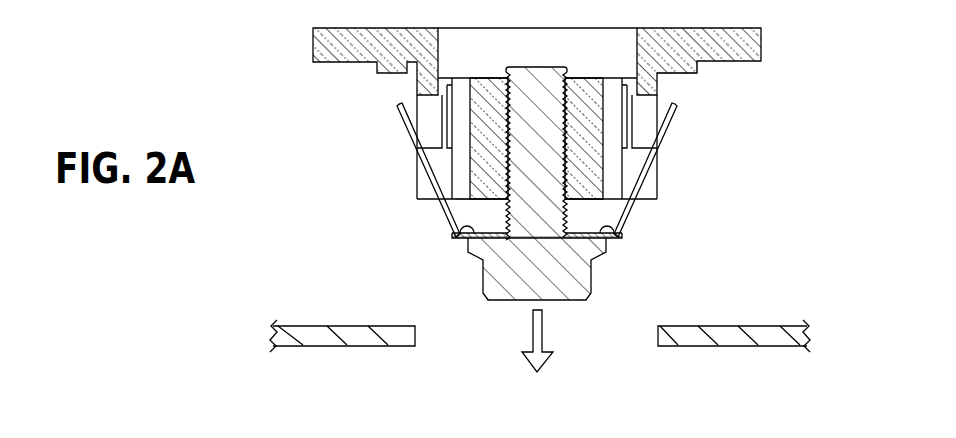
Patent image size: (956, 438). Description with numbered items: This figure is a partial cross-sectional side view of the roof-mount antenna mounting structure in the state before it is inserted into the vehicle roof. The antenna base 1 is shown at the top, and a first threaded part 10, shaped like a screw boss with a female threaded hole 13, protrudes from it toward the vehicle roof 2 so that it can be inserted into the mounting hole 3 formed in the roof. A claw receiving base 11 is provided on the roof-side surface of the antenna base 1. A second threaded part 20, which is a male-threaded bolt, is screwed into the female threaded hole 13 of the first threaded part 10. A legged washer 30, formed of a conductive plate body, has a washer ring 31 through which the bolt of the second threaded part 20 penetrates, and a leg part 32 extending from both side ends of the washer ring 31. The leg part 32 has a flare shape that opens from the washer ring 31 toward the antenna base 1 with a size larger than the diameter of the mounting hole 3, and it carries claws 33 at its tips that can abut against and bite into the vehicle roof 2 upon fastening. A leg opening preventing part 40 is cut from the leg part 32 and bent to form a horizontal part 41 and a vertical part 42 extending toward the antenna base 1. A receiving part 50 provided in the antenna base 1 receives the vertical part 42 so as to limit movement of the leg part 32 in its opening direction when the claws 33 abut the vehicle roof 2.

The antenna base 1 is at (761, 40).
The vehicle roof 2 is at (768, 338).
The mounting hole 3 is at (416, 336).
The first threaded part 10 is at (572, 80).
The claw receiving base 11 is at (697, 74).
The female threaded hole 13 is at (496, 182).
The second threaded part 20 is at (591, 284).
The legged washer 30 is at (640, 219).
The washer ring 31 is at (472, 240).
The leg part 32 is at (424, 194).
The claws 33 is at (398, 116).
The leg opening preventing part 40 is at (618, 110).
The horizontal part 41 is at (650, 163).
The vertical part 42 is at (456, 122).
The receiving part 50 is at (417, 87).